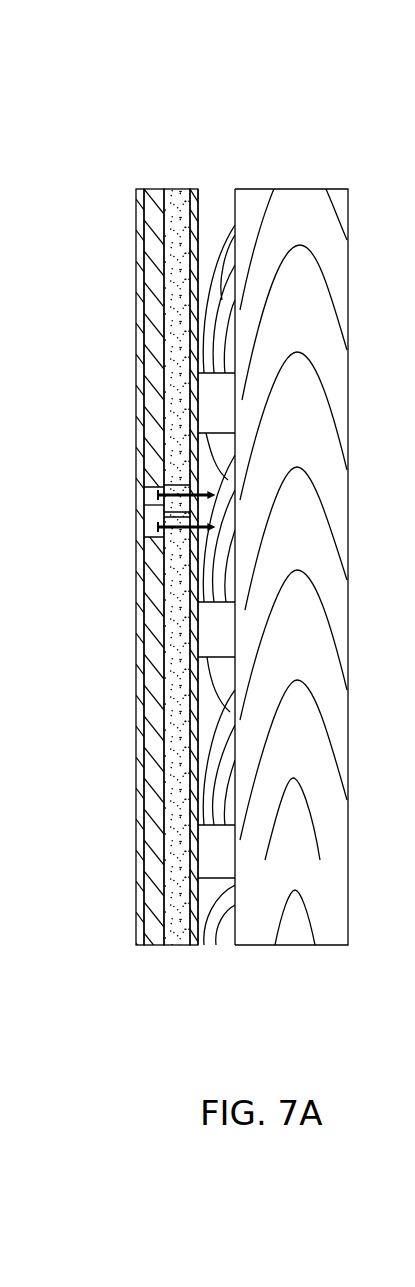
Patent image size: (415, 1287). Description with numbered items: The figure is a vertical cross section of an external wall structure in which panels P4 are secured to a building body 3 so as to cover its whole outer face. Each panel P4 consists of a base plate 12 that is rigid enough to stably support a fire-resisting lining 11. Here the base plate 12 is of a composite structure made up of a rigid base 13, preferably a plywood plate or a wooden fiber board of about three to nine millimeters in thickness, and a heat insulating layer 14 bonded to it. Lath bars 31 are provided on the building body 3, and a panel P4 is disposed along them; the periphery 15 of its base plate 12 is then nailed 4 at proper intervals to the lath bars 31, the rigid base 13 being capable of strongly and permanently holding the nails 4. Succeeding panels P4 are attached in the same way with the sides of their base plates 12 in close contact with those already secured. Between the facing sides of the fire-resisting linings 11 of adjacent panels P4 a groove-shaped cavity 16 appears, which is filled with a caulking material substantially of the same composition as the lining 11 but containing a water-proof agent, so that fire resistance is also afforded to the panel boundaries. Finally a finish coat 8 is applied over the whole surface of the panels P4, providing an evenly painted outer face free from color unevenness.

The building body 3 is at (334, 363).
The nails 4 is at (172, 490).
The finish coat 8 is at (142, 729).
The fire-resisting lining 11 is at (149, 189).
The base plate 12 is at (206, 551).
The rigid base 13 is at (195, 189).
The heat insulating layer 14 is at (177, 189).
The periphery 15 is at (214, 527).
The groove-shaped cavity 16 is at (148, 515).
The lath bars 31 is at (220, 203).
The panel P4 is at (139, 182).